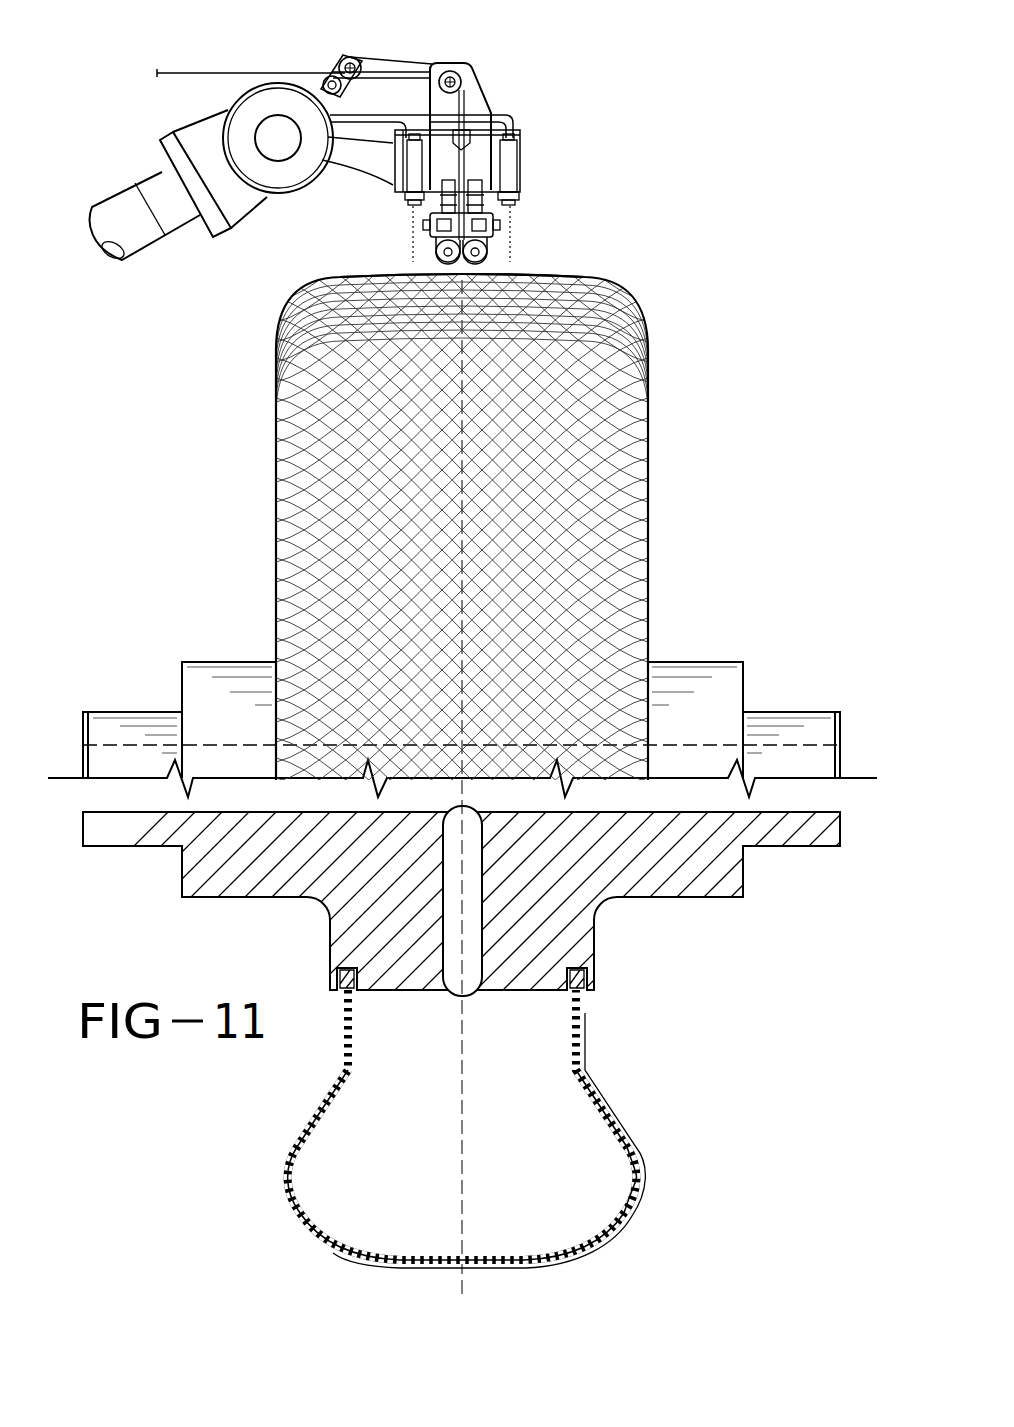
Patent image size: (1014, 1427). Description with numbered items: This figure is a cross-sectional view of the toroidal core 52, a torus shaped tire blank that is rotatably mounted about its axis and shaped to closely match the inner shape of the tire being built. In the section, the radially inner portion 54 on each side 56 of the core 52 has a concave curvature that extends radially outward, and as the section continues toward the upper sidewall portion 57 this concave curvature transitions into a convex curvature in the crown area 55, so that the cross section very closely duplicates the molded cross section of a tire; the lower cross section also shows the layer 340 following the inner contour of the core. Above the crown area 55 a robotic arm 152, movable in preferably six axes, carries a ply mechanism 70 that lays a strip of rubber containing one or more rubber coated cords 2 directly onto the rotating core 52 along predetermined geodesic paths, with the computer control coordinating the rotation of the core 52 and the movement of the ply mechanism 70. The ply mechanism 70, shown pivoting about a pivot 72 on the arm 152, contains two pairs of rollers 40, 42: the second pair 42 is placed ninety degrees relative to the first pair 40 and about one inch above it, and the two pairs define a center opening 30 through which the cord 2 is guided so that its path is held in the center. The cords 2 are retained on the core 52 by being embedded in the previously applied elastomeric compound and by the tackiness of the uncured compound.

The rubber coated cord 2 is at (226, 72).
The center opening 30 is at (450, 268).
The first pair of rollers 40 is at (440, 247).
The second pair of rollers 42 is at (481, 248).
The toroidal core 52 is at (273, 384).
The radially inner portion 54 is at (349, 1077).
The crown area 55 is at (597, 272).
The side of the toroidal mandrel 56 is at (298, 1161).
The upper sidewall portion 57 is at (301, 1211).
The ply mechanism 70 is at (519, 77).
The pivot 72 is at (356, 58).
The robotic arm 152 is at (137, 235).
The liner 340 is at (575, 1259).